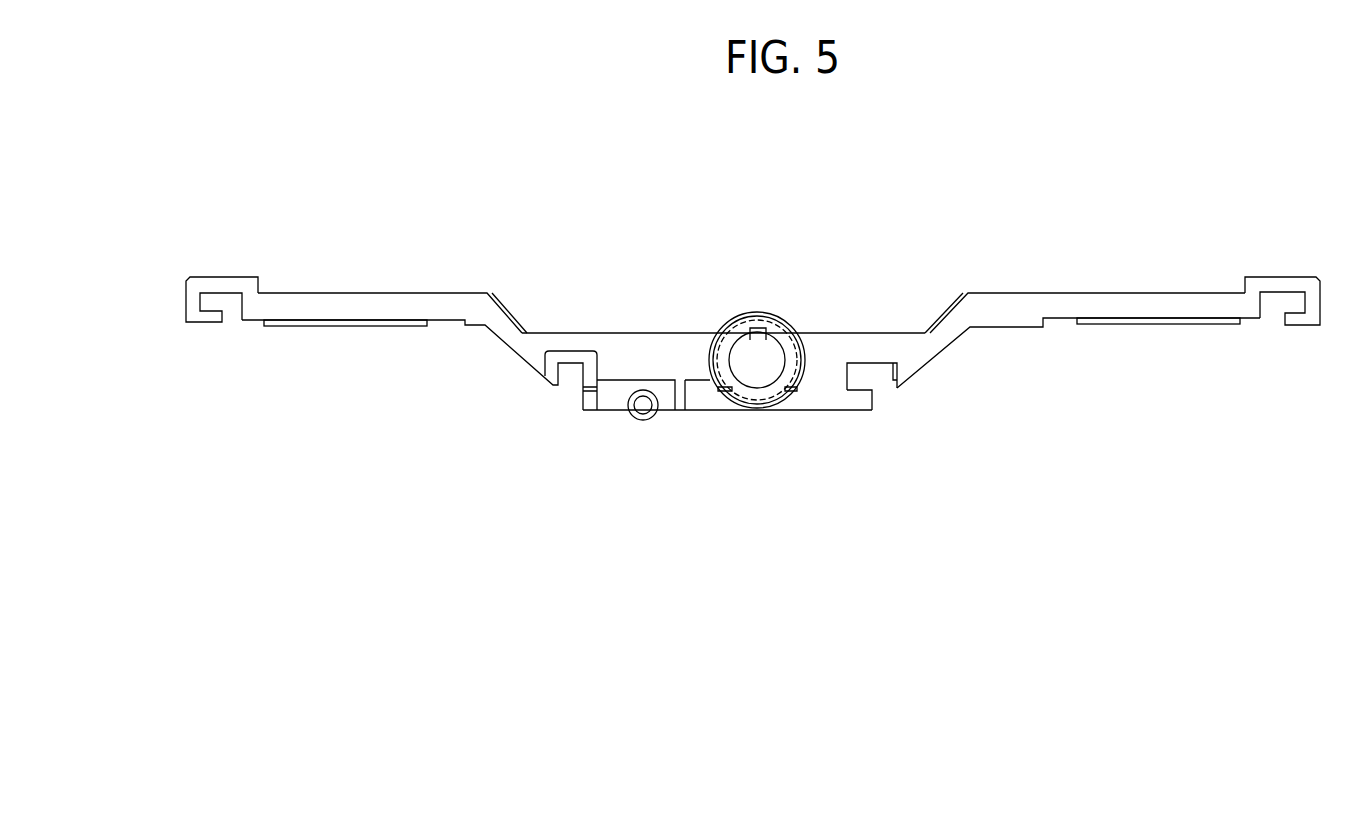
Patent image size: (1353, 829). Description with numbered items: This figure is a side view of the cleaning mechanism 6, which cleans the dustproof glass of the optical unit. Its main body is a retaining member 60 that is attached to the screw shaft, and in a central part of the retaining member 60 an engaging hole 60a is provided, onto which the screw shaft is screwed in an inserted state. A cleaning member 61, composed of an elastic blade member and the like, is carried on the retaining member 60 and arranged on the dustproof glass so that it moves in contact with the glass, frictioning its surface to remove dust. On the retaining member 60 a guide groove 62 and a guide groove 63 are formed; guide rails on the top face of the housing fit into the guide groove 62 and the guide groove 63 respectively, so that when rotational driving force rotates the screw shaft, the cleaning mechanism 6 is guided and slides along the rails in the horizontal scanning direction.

The cleaning mechanism 6 is at (870, 228).
The retaining member 60 is at (485, 293).
The engaging hole 60a is at (757, 355).
The cleaning member 61 is at (323, 328).
The guide groove 62 is at (562, 375).
The guide groove 63 is at (200, 303).